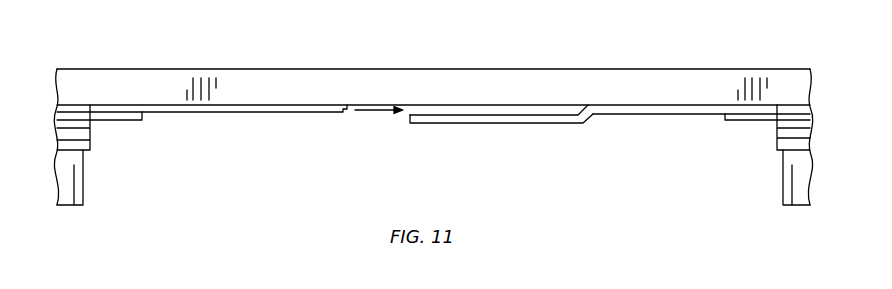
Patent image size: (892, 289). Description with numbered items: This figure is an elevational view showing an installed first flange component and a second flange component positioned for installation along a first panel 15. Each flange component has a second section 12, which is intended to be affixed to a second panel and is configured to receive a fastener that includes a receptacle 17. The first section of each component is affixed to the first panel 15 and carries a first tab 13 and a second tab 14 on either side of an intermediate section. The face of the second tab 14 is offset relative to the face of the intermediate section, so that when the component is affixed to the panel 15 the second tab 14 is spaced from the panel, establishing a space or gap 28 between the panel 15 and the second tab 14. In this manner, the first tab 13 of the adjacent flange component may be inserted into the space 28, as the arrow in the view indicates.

The first panel 15 is at (433, 69).
The second section 12 is at (162, 112).
The first tab 13 is at (335, 112).
The second tab 14 is at (495, 124).
The space or gap 28 is at (440, 108).
The receptacle 17 is at (83, 177).